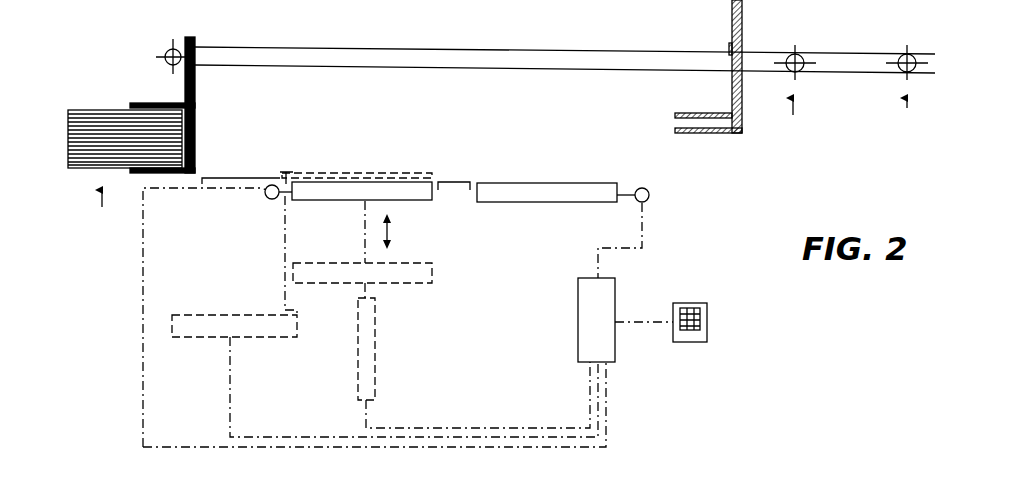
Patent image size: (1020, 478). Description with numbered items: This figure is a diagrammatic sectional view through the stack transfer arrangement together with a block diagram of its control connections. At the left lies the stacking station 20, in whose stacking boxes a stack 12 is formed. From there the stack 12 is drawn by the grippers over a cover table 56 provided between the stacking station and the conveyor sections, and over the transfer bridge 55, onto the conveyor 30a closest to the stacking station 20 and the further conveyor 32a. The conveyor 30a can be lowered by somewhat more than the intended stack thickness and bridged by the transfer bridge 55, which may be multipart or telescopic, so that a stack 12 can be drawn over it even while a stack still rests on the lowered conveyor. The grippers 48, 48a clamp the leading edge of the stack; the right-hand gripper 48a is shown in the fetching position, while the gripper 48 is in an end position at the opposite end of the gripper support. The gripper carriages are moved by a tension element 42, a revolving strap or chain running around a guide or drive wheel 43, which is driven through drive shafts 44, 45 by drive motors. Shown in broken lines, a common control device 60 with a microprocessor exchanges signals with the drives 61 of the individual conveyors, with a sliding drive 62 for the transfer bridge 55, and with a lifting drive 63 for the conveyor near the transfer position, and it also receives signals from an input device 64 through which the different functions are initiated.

The stack 12 is at (93, 113).
The stacking station 20 is at (105, 218).
The conveyor 30a is at (420, 198).
The conveyor 32a is at (565, 203).
The tension element 42 is at (481, 53).
The guide or drive wheel 43 is at (793, 54).
The drive shaft 44 is at (799, 127).
The drive shaft 45 is at (909, 102).
The gripper 48 is at (738, 133).
The right-hand gripper 48a is at (197, 94).
The transfer bridge 55 is at (343, 175).
The cover table 56 is at (237, 178).
The control device 60 is at (578, 310).
The drive 61 is at (267, 198).
The sliding drive 62 is at (186, 338).
The lifting drive 63 is at (368, 367).
The input device 64 is at (707, 337).